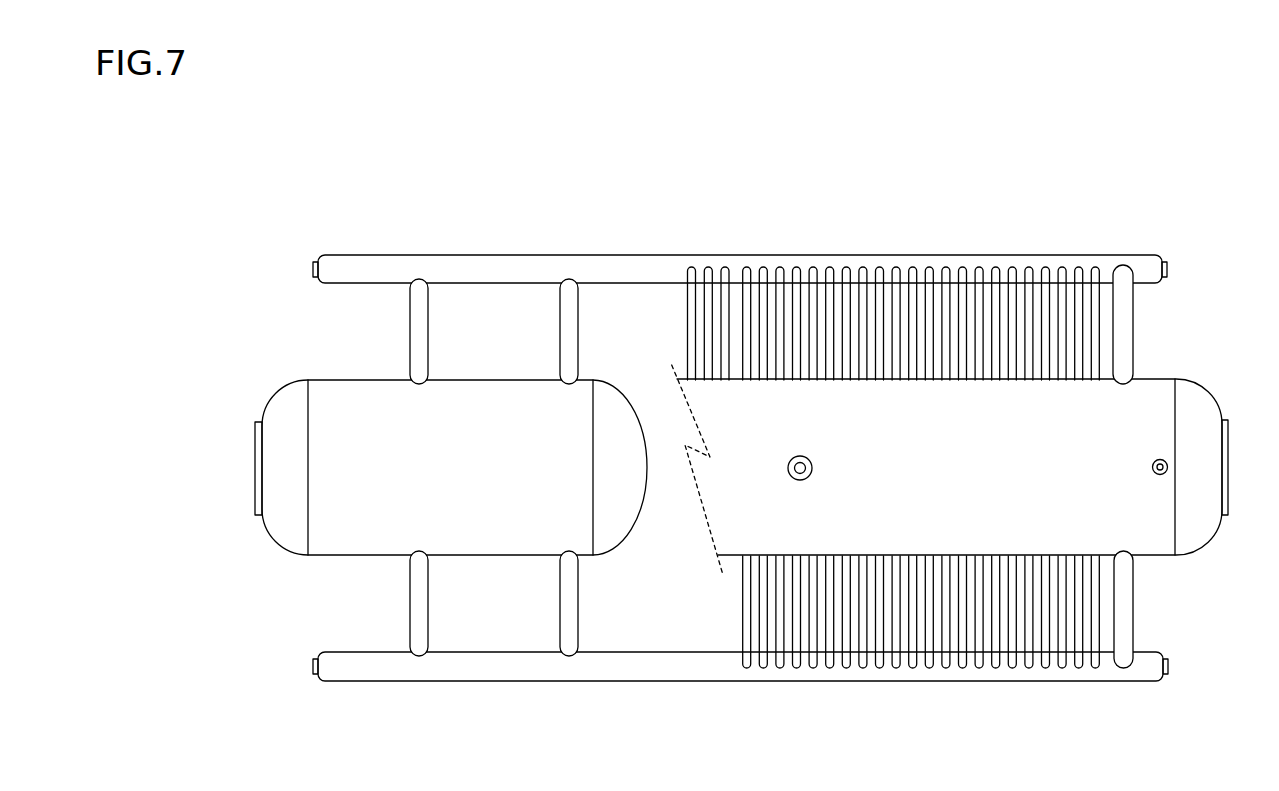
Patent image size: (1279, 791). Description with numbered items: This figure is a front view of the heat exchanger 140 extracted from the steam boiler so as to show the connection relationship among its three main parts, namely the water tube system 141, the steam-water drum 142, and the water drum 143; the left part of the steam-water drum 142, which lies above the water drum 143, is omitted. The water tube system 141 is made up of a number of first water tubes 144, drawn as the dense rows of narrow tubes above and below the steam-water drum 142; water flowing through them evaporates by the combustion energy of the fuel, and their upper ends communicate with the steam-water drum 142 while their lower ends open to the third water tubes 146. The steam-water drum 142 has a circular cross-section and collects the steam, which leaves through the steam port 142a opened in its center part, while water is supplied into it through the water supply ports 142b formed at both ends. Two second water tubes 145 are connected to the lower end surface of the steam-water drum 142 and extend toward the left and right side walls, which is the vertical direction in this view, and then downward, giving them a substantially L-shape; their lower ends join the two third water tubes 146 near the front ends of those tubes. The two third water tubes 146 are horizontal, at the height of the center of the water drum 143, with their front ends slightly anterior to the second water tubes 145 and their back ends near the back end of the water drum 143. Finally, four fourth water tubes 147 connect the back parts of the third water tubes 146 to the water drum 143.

The heat exchanger 140 is at (757, 187).
The water tube system 141 is at (894, 464).
The steam-water drum 142 is at (950, 454).
The steam port 142a is at (813, 467).
The water supply port 142b is at (1151, 467).
The water drum 143 is at (338, 558).
The first water tubes 144 is at (821, 247).
The second water tubes 145 is at (1127, 318).
The third water tubes 146 is at (597, 255).
The fourth water tubes 147 is at (412, 329).